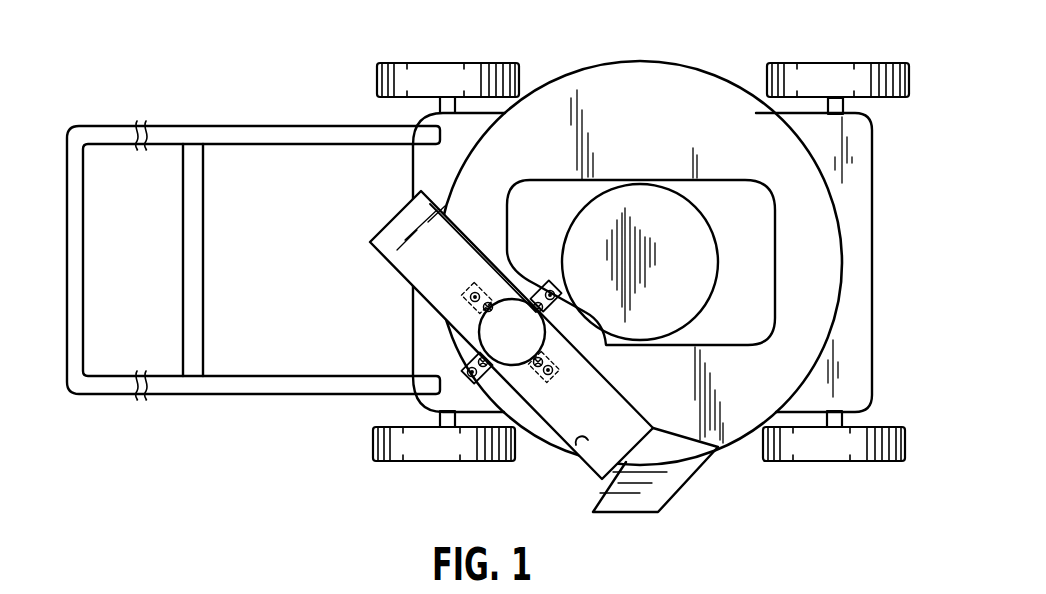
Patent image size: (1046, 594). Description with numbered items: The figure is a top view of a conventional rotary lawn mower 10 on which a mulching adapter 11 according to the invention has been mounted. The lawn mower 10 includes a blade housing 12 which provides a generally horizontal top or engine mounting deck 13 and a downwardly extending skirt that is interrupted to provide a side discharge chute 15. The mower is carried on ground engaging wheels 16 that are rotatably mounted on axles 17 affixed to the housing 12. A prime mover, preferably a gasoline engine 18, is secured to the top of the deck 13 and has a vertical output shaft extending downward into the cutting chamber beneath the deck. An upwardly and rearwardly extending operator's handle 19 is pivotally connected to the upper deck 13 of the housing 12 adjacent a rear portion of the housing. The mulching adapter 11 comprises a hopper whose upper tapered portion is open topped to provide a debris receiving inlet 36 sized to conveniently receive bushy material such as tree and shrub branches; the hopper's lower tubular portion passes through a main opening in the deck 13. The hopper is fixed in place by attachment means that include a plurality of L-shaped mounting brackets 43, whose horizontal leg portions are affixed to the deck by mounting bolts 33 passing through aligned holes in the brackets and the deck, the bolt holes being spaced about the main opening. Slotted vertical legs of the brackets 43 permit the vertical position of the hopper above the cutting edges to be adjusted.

The rotary lawn mower 10 is at (489, 266).
The mulching adapter 11 is at (545, 432).
The blade housing 12 is at (594, 62).
The engine mounting deck 13 is at (675, 83).
The side discharge chute 15 is at (688, 482).
The ground engaging wheels 16 is at (443, 62).
The axles 17 is at (440, 106).
The gasoline engine 18 is at (777, 268).
The operator's handle 19 is at (102, 397).
The mounting bolts 33 is at (438, 208).
The debris receiving inlet 36 is at (588, 440).
The L-shaped mounting brackets 43 is at (462, 366).